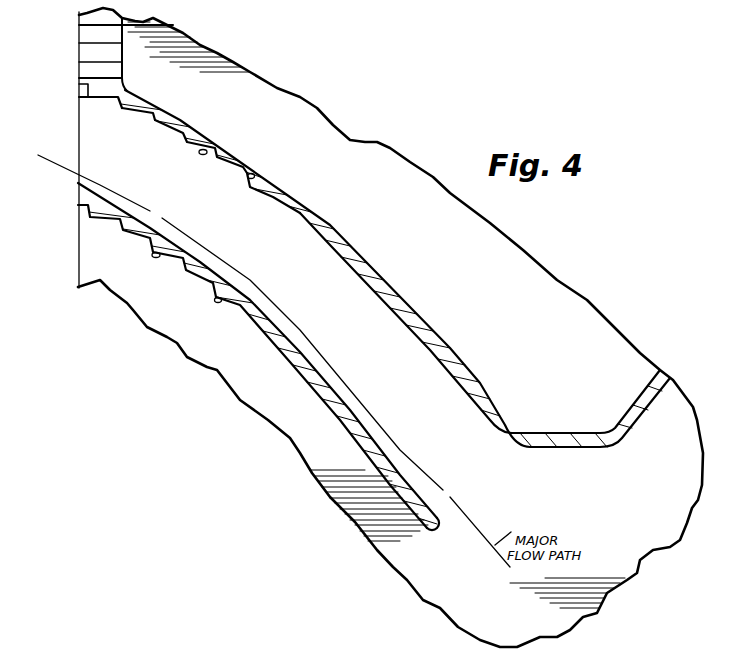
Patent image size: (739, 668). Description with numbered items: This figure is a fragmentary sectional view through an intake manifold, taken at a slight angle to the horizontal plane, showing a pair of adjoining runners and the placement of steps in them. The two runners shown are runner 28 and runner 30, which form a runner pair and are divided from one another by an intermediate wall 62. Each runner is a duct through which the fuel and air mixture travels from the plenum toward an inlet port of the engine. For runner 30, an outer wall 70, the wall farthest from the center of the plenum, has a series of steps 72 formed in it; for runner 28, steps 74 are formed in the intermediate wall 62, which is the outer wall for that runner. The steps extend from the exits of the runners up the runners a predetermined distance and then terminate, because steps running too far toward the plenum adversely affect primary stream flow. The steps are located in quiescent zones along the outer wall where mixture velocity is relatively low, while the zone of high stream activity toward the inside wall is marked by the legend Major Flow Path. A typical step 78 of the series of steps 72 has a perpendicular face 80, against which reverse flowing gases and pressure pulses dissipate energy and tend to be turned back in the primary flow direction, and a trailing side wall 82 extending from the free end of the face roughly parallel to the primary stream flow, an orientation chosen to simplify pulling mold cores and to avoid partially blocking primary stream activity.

The runner 28 is at (413, 482).
The runner 30 is at (352, 252).
The intermediate wall 62 is at (337, 397).
The outer wall 70 is at (418, 332).
The steps 72 is at (213, 156).
The steps 74 is at (263, 318).
The step 78 is at (150, 102).
The perpendicular face 80 is at (197, 96).
The trailing side wall 82 is at (135, 113).